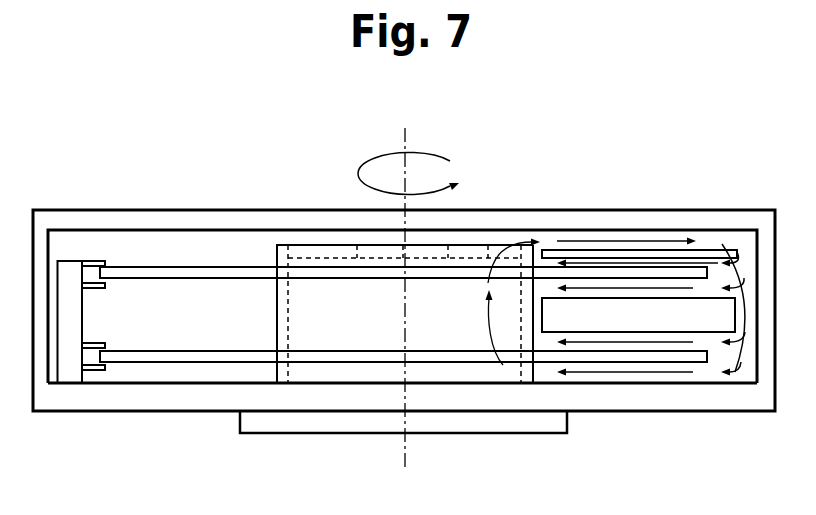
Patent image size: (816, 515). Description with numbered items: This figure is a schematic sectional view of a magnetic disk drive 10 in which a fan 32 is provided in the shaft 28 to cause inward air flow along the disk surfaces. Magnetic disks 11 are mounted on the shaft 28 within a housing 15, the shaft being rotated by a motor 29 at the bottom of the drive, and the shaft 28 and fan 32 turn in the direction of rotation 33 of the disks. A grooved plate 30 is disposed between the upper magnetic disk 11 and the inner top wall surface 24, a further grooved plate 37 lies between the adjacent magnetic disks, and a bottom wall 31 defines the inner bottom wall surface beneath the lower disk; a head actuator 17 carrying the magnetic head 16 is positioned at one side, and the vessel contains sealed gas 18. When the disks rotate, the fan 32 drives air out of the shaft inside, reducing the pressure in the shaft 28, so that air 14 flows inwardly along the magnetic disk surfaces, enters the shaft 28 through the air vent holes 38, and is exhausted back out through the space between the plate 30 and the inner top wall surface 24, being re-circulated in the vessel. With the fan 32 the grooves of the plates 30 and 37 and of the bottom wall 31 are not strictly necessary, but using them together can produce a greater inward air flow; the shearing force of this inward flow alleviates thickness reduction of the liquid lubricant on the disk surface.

The magnetic disk drive 10 is at (114, 139).
The magnetic disk 11 is at (183, 270).
The air 14 is at (594, 250).
The outer housing 15 is at (448, 396).
The magnetic head 16 is at (123, 365).
The head actuator 17 is at (68, 380).
The sealed gas 18 is at (85, 243).
The inner top wall surface 24 is at (238, 230).
The shaft 28 is at (287, 258).
The motor 29 is at (265, 425).
The grooved plate 30 is at (700, 255).
The bottom wall 31 is at (627, 385).
The fan 32 is at (490, 245).
The direction of rotation 33 is at (378, 153).
The grooved plate 37 is at (667, 318).
The air vent holes 38 is at (534, 383).